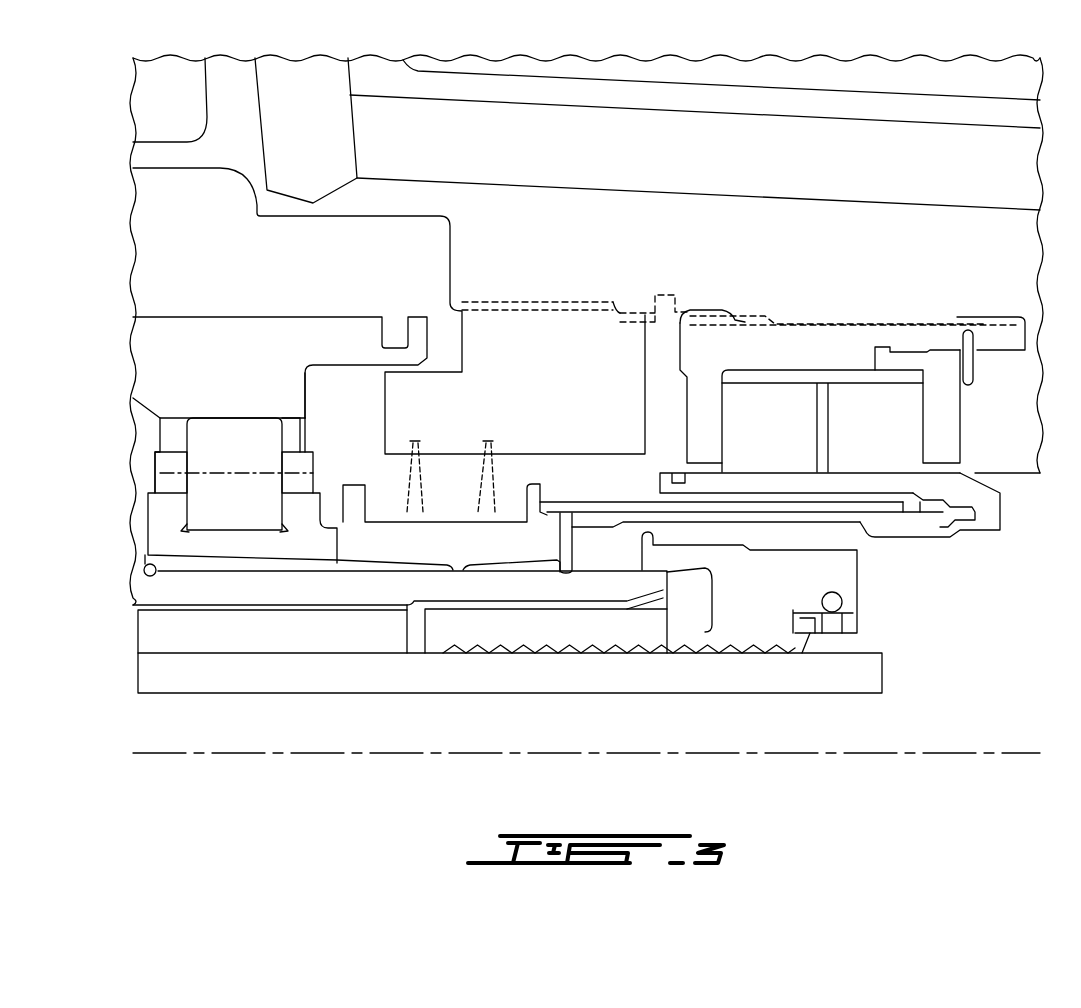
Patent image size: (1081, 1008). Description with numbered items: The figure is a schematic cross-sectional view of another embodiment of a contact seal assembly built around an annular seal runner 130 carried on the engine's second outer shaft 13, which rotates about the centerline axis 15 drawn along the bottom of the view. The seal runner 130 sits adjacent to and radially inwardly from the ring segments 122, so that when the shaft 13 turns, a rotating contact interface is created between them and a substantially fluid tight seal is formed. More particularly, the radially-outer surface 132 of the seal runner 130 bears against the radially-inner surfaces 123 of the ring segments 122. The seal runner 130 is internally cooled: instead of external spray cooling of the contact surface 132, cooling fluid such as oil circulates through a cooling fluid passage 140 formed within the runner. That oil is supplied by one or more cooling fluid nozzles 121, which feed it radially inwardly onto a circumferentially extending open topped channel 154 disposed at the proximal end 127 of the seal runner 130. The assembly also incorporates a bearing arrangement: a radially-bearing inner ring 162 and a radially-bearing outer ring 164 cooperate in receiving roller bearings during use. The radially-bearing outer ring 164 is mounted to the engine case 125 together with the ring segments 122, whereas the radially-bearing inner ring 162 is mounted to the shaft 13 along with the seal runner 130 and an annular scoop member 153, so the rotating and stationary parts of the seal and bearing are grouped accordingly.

The second outer shaft 13 is at (867, 677).
The centerline axis 15 is at (934, 752).
The cooling fluid nozzles 121 is at (486, 441).
The ring segments 122 is at (855, 390).
The radially-inner surfaces 123 is at (772, 473).
The engine case 125 is at (682, 251).
The proximal end 127 is at (627, 500).
The annular seal runner 130 is at (936, 490).
The radially-outer surface 132 is at (710, 482).
The cooling fluid passage 140 is at (900, 523).
The annular scoop member 153 is at (400, 540).
The open topped channel 154 is at (383, 517).
The radially-bearing inner ring 162 is at (227, 547).
The radially-bearing outer ring 164 is at (320, 342).